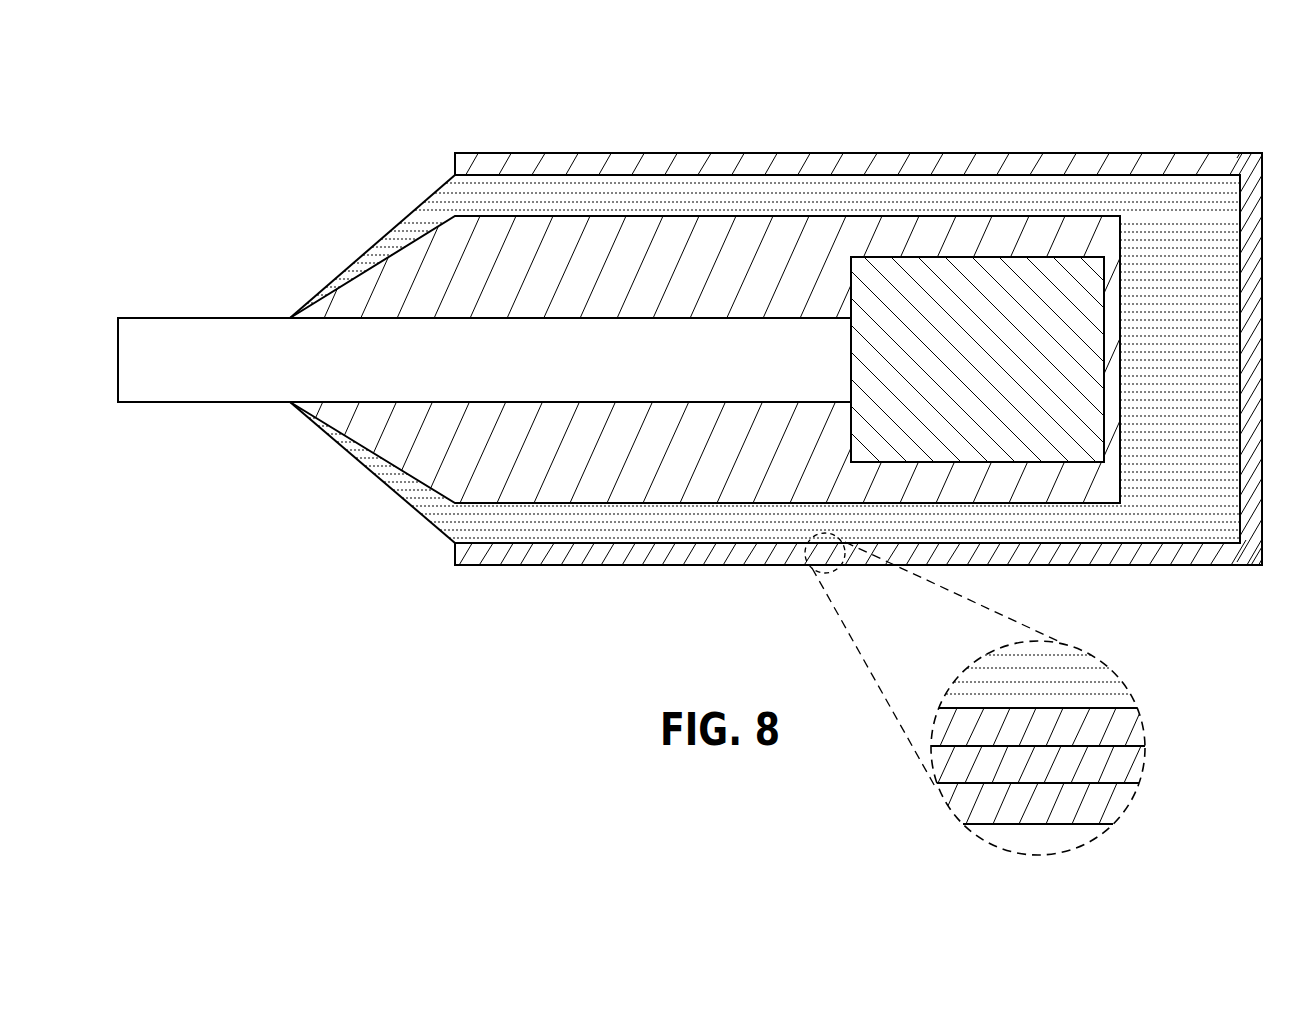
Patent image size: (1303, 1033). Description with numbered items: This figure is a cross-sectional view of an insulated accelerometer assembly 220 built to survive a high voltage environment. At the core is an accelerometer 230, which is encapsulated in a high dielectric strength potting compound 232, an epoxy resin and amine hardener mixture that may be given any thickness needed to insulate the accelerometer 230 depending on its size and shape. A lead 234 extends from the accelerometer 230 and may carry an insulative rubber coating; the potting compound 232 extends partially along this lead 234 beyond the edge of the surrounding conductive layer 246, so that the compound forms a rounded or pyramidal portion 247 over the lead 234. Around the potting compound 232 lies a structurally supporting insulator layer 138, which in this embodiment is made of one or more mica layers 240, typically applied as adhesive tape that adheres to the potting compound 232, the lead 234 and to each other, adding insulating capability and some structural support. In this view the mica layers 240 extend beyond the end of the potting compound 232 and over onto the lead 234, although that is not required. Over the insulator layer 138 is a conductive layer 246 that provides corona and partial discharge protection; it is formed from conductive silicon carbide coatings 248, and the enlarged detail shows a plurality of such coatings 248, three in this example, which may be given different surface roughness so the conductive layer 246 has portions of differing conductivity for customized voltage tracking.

The insulated accelerometer assembly 220 is at (574, 123).
The accelerometer 230 is at (990, 266).
The high dielectric strength potting compound 232 is at (750, 232).
The lead 234 is at (215, 327).
The conductive layer 246 is at (657, 553).
The rounded or pyramidal portion 247 is at (400, 253).
The conductive silicon carbide coating 248 is at (1083, 805).
The structurally supporting insulator layer 138 is at (417, 494).
The mica layer 240 is at (458, 618).